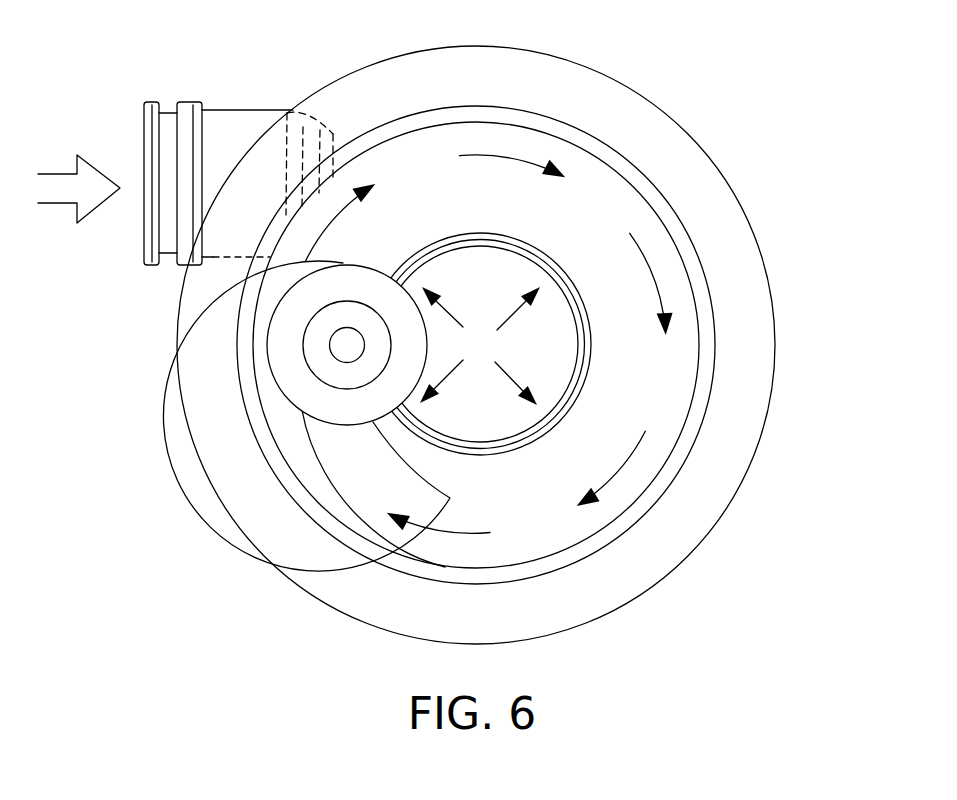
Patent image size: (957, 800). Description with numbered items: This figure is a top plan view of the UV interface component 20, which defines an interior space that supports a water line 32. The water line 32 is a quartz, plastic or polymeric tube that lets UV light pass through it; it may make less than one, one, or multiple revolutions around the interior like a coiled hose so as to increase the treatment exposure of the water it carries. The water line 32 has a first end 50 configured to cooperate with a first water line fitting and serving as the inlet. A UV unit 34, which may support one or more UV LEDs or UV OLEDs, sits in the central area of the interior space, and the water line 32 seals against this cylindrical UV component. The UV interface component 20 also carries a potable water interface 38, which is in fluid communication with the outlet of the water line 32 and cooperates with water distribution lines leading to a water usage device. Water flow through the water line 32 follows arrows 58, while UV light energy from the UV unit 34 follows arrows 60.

The UV interface component 20 is at (758, 108).
The water line 32 is at (678, 292).
The UV unit 34 is at (548, 356).
The potable water interface 38 is at (342, 347).
The first end 50 is at (338, 148).
The arrows 58 is at (527, 160).
The arrows 60 is at (448, 377).